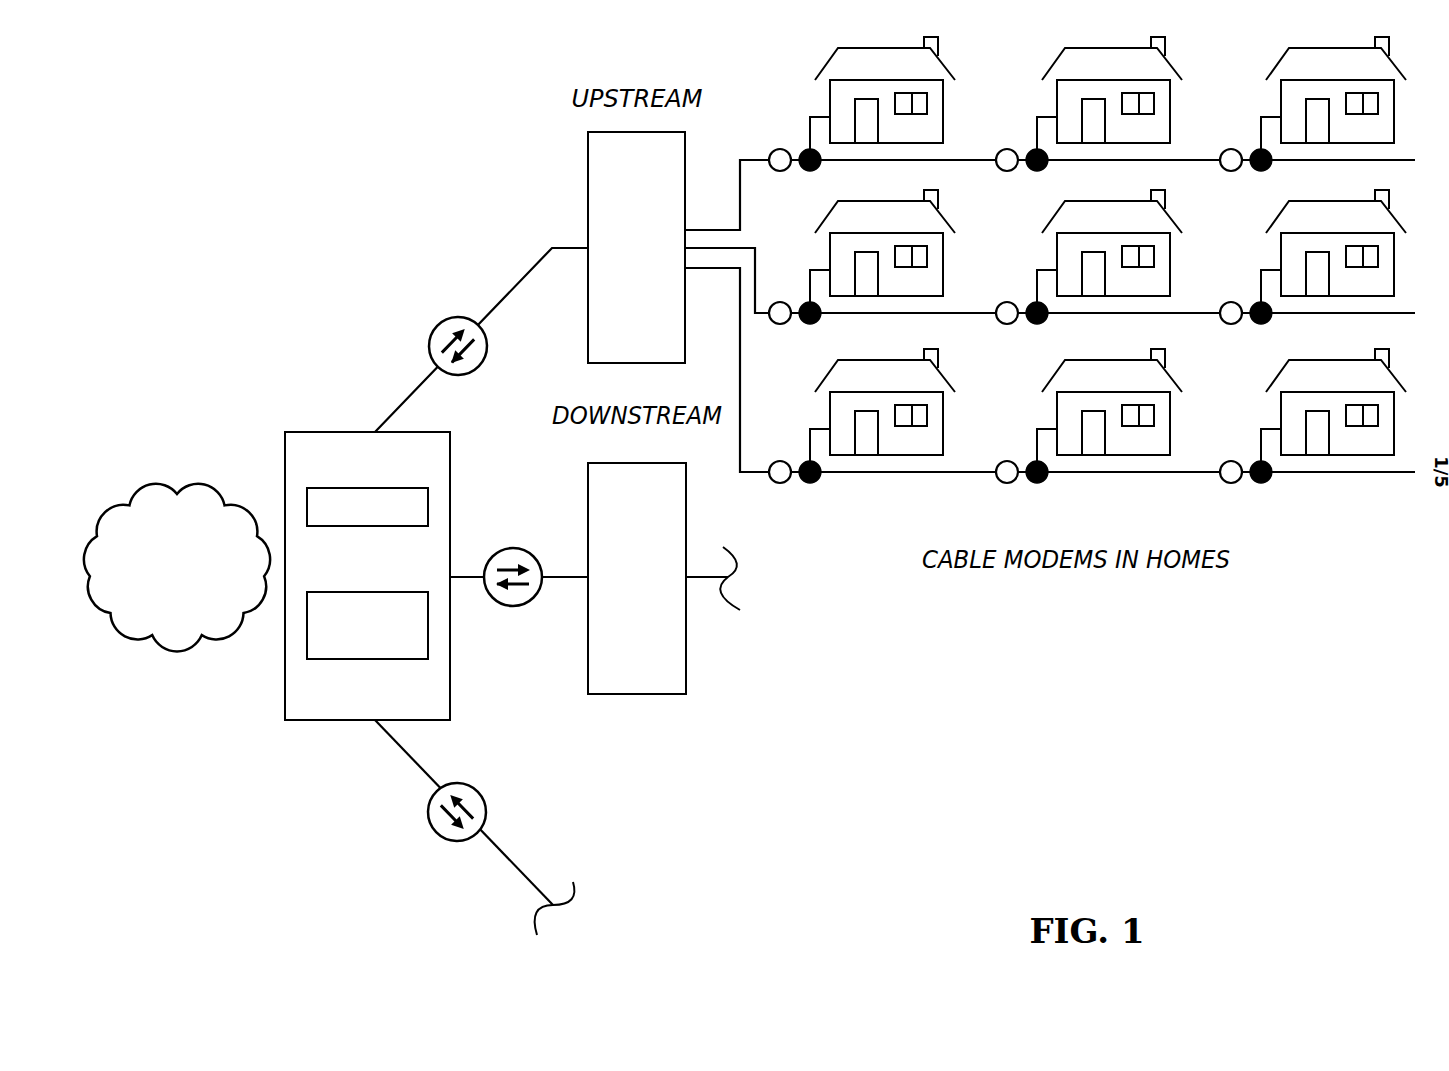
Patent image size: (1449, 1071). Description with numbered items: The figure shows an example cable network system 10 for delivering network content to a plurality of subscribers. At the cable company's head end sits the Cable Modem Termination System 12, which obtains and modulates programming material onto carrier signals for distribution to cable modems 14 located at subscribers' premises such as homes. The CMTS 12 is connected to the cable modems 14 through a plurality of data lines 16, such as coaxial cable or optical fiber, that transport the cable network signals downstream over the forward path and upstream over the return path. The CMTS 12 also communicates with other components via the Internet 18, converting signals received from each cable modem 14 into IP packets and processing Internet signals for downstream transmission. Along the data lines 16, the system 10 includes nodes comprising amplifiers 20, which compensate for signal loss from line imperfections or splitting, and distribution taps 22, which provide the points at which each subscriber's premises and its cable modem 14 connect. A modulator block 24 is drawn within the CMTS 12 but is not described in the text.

The cable network system 10 is at (286, 190).
The Cable Modem Termination System 12 is at (340, 488).
The cable modems 14 is at (943, 95).
The data lines 16 is at (518, 282).
The Internet 18 is at (160, 489).
The amplifiers 20 is at (780, 149).
The distribution taps 22 is at (804, 170).
The QAM modulators 24 is at (337, 659).